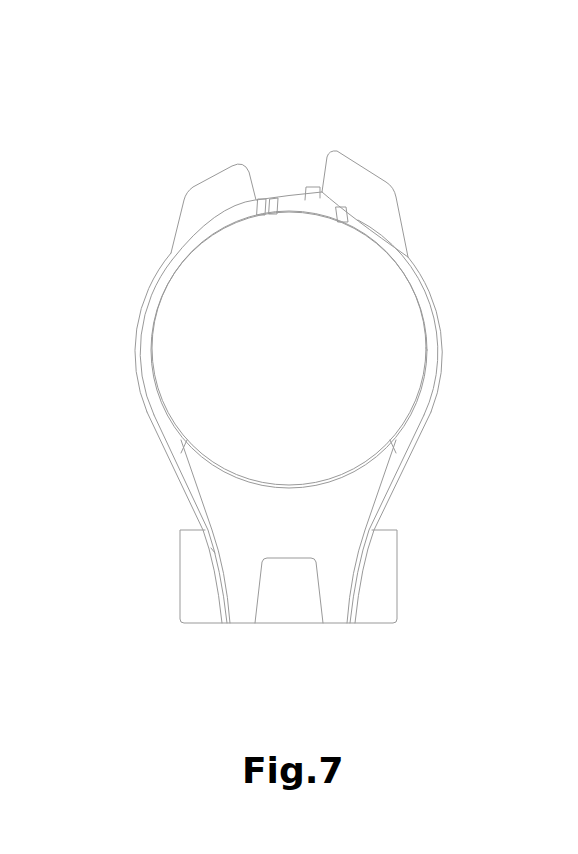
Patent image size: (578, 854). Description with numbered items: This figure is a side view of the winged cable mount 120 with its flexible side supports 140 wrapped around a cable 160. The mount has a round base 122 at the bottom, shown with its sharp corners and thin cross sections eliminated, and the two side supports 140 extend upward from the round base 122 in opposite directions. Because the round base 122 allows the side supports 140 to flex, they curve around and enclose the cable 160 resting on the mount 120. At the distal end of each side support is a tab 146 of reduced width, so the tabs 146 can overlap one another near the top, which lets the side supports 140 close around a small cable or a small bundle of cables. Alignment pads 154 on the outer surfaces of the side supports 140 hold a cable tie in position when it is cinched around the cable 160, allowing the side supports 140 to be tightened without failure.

The winged cable mount 120 is at (378, 580).
The round base 122 is at (379, 626).
The side supports 140 is at (158, 288).
The tab 146 is at (293, 203).
The alignment pads 154 is at (212, 198).
The cable 160 is at (363, 331).